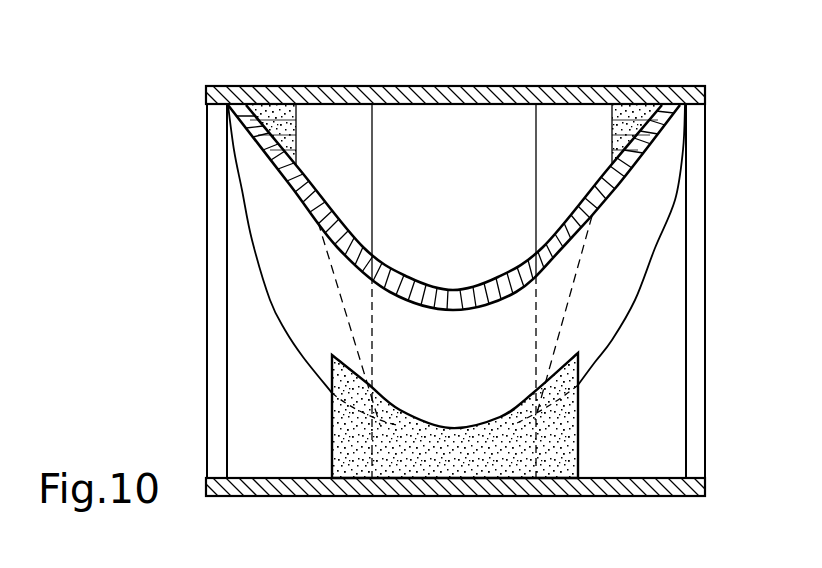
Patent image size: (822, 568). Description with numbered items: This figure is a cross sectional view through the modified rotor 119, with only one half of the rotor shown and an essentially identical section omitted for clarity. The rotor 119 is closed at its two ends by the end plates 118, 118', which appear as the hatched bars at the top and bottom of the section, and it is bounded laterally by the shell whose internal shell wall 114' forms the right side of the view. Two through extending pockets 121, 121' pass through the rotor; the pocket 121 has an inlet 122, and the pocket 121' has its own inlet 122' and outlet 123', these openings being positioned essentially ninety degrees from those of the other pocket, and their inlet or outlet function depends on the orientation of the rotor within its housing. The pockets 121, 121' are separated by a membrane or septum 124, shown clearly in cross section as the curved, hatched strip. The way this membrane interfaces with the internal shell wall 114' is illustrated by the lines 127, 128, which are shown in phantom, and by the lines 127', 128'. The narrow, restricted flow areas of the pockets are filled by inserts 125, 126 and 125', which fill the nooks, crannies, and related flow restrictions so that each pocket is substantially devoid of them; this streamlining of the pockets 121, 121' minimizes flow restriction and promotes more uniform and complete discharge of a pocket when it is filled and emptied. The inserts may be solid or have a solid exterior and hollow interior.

The rotor 119 is at (721, 74).
The end plate 118 is at (456, 72).
The end plate 118' is at (456, 512).
The pocket 121 is at (378, 258).
The pocket 121' is at (260, 503).
The inlet 122 is at (509, 291).
The inlet 122' is at (177, 291).
The outlet 123' is at (748, 291).
The internal shell wall 114' is at (721, 291).
The membrane or septum 124 is at (410, 278).
The insert 125 is at (297, 139).
The insert 125' is at (489, 415).
The insert 126 is at (611, 125).
The line 127 is at (329, 323).
The line 127' is at (280, 249).
The line 128 is at (571, 318).
The line 128' is at (631, 245).